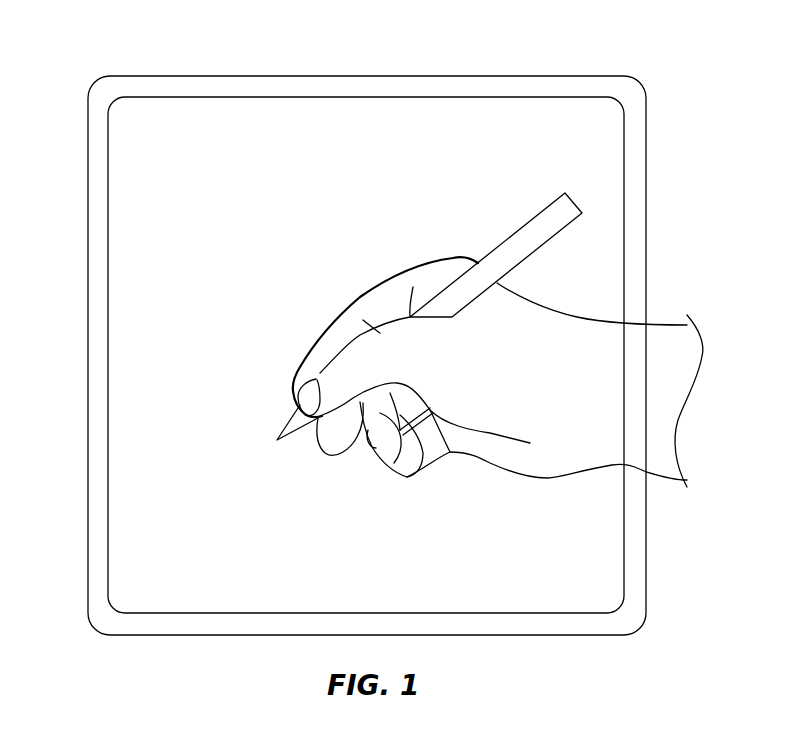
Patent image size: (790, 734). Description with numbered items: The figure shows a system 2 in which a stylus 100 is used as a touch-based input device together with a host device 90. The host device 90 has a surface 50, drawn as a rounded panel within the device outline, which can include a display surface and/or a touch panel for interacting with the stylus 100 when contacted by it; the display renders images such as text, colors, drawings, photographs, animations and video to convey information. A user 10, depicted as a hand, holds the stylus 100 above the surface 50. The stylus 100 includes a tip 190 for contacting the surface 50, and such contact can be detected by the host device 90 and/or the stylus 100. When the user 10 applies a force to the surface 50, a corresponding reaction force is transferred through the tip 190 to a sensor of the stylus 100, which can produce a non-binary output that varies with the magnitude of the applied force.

The system 2 is at (101, 22).
The host device 90 is at (367, 87).
The surface 50 is at (482, 105).
The user 10 is at (579, 320).
The stylus 100 is at (535, 206).
The tip 190 is at (279, 423).